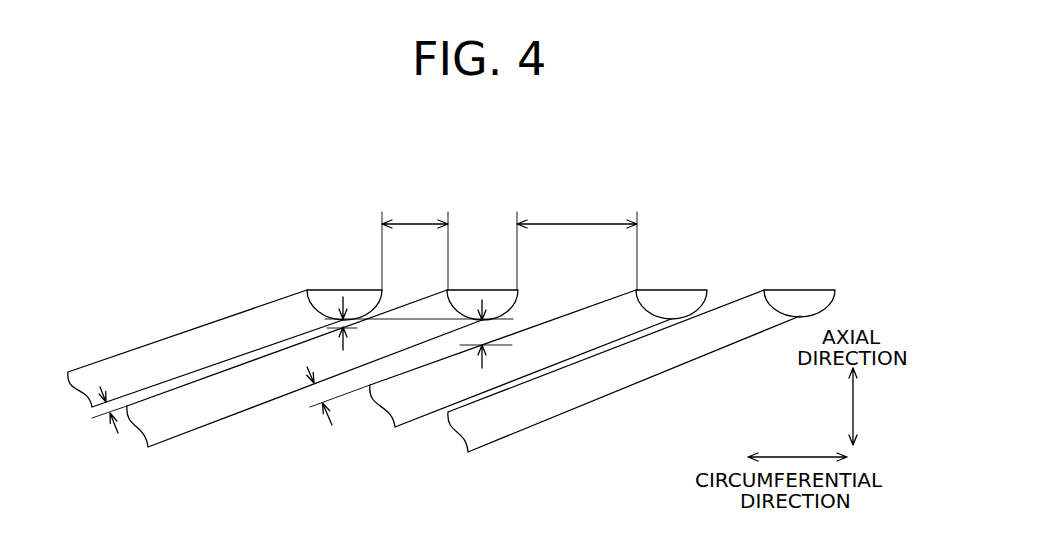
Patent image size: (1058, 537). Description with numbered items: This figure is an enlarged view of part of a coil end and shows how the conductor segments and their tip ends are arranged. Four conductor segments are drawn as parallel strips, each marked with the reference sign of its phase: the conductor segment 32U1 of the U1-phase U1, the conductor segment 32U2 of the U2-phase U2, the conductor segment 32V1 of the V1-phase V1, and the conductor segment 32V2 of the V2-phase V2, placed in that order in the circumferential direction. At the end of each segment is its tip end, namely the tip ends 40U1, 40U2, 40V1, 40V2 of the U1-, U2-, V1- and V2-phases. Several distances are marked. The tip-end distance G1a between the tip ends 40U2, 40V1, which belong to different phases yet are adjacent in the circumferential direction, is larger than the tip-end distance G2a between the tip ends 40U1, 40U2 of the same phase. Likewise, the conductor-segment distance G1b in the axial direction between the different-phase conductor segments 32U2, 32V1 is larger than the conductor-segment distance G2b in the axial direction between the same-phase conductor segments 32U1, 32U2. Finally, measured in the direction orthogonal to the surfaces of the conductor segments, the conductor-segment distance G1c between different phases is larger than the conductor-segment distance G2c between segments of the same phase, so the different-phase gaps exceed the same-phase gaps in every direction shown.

The conductor segment of the U1-phase 32U1 is at (225, 306).
The conductor segment of the U2-phase 32U2 is at (322, 341).
The conductor segment of the V1-phase 32V1 is at (561, 361).
The conductor segment of the V2-phase 32V2 is at (662, 360).
The tip end of the U1-phase conductor segment 40U1 is at (327, 293).
The tip end of the U2-phase conductor segment 40U2 is at (495, 292).
The tip end of the V1-phase conductor segment 40V1 is at (667, 296).
The tip end of the V2-phase conductor segment 40V2 is at (793, 298).
The U1-phase U1 is at (225, 306).
The U2-phase U2 is at (322, 316).
The V1-phase V1 is at (561, 324).
The V2-phase V2 is at (662, 336).
The tip-end distance in the same phase G2a is at (413, 224).
The tip-end distance in different phases G1a is at (576, 224).
The conductor-segment distance in the same phase in the axial direction G2b is at (335, 326).
The conductor-segment distance in different phases in the axial direction G1b is at (484, 332).
The conductor-segment distance in the same phase in the orthogonal direction G2c is at (106, 414).
The conductor-segment distance in different phases in the orthogonal direction G1c is at (318, 394).